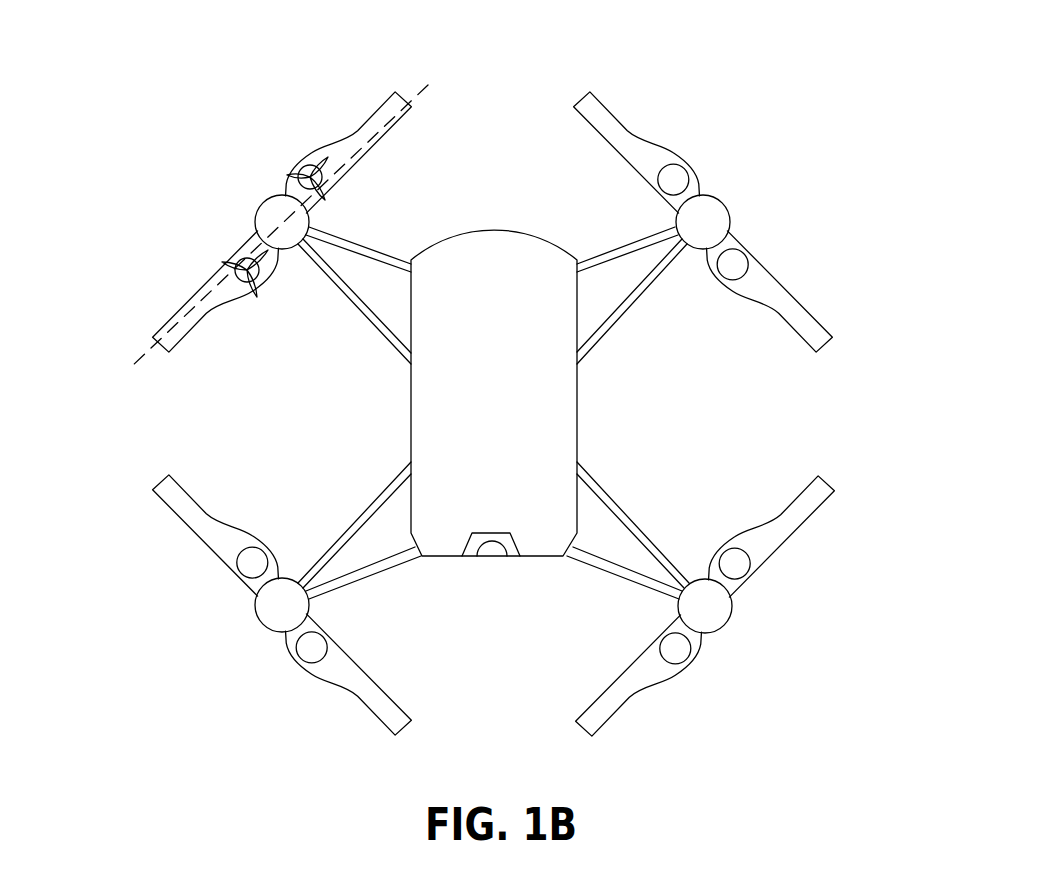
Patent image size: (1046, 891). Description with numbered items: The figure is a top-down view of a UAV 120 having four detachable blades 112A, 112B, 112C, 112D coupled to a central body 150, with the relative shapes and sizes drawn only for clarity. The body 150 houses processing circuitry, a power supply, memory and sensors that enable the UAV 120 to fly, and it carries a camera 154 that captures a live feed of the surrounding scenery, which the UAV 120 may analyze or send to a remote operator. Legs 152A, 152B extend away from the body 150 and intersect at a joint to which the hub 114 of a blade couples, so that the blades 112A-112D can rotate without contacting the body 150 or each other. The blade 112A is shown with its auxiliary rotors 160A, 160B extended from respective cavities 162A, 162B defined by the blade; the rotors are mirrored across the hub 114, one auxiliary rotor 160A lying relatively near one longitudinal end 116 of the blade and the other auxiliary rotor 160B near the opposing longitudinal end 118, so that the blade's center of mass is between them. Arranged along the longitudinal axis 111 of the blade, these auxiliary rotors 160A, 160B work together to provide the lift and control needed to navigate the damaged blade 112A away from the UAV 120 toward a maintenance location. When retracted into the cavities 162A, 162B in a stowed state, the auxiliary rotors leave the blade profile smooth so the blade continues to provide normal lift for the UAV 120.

The longitudinal axis of rotor arm 111 is at (438, 69).
The blade 112A is at (378, 113).
The blade 112B is at (580, 97).
The blade 112C is at (162, 480).
The blade 112D is at (807, 507).
The hub 114 is at (272, 220).
The longitudinal end 116 is at (139, 337).
The opposing longitudinal end 118 is at (424, 113).
The UAV 120 is at (822, 87).
The body 150 is at (540, 260).
The leg 152A is at (397, 353).
The leg 152B is at (388, 262).
The camera 154 is at (493, 552).
The auxiliary rotor 160A is at (233, 250).
The auxiliary rotor 160B is at (320, 153).
The cavity 162A is at (258, 268).
The cavity 162B is at (330, 180).